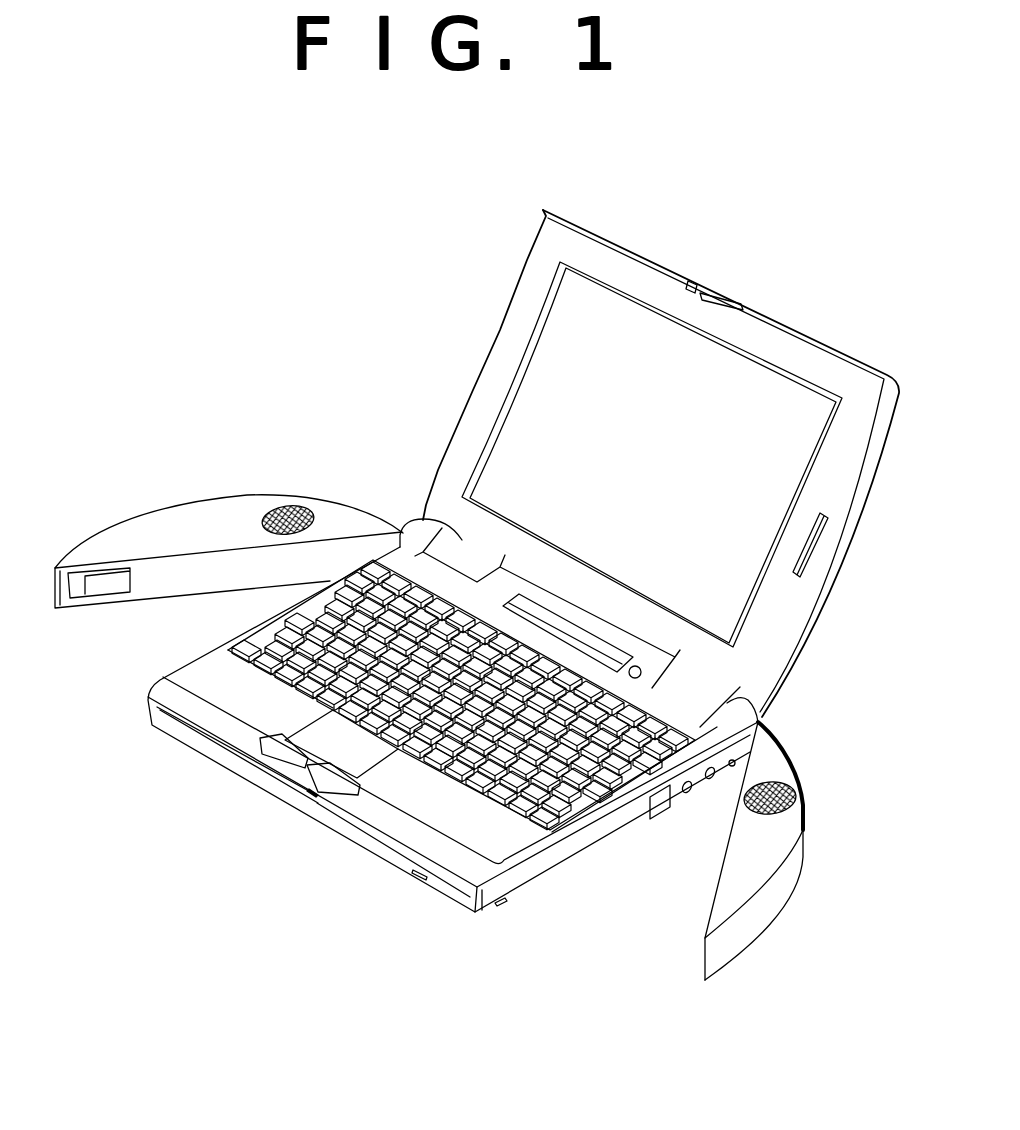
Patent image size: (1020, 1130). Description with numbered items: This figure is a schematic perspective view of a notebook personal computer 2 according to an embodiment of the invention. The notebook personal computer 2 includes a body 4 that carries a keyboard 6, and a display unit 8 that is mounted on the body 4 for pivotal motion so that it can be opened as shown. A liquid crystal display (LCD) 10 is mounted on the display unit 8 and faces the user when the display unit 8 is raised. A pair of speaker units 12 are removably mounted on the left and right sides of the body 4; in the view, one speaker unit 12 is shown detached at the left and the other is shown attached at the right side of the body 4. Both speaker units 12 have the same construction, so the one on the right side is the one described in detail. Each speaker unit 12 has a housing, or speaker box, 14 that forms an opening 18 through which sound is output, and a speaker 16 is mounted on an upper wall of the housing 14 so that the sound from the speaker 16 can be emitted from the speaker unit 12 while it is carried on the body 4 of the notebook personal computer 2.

The notebook personal computer 2 is at (397, 504).
The body 4 is at (263, 713).
The keyboard 6 is at (443, 769).
The display unit 8 is at (840, 453).
The liquid crystal display (LCD) 10 is at (577, 355).
The speaker unit 12 is at (203, 496).
The housing (speaker box) 14 is at (167, 525).
The speaker 16 is at (285, 507).
The opening 18 is at (112, 587).